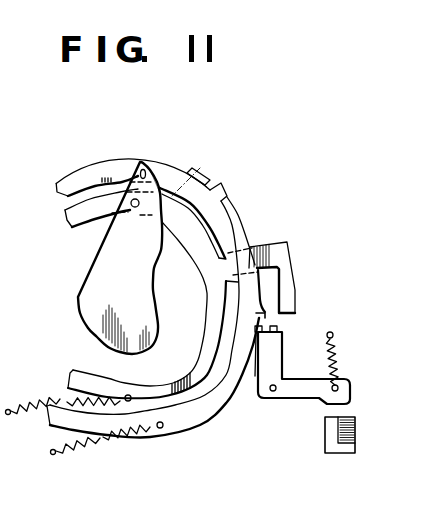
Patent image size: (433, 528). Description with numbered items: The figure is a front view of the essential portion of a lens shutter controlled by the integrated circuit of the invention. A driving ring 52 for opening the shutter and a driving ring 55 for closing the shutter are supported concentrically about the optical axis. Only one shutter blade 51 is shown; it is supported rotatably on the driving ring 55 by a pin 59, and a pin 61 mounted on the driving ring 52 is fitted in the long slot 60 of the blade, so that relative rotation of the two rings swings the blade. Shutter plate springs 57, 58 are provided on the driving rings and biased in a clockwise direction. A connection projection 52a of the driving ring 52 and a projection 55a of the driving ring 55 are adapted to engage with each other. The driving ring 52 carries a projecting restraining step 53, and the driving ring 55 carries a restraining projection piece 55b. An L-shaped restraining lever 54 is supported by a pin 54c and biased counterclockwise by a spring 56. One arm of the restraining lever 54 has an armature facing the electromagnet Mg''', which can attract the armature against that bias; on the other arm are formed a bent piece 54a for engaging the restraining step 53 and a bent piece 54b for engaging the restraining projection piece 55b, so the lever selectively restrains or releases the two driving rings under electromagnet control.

The shutter blade 51 is at (87, 291).
The driving ring for opening the shutter 52 is at (70, 177).
The connection projection 52a is at (222, 184).
The restraining step 53 is at (296, 307).
The restraining lever 54 is at (300, 392).
The bent piece 54a is at (252, 360).
The bent piece 54b is at (287, 333).
The pin 54c is at (272, 393).
The driving ring for closing the shutter 55 is at (65, 211).
The projection 55a is at (204, 172).
The restraining projection piece 55b is at (266, 312).
The spring 56 is at (333, 365).
The shutter plate spring 57 is at (95, 440).
The shutter plate spring 58 is at (47, 415).
The pin 59 is at (134, 207).
The long slot 60 is at (153, 173).
The pin 61 is at (142, 160).
The electromagnet Mg''' is at (336, 455).